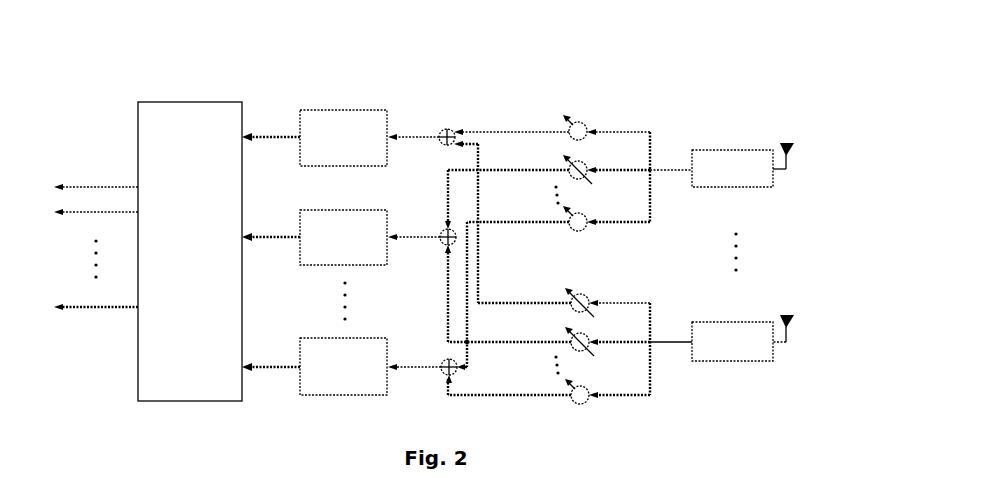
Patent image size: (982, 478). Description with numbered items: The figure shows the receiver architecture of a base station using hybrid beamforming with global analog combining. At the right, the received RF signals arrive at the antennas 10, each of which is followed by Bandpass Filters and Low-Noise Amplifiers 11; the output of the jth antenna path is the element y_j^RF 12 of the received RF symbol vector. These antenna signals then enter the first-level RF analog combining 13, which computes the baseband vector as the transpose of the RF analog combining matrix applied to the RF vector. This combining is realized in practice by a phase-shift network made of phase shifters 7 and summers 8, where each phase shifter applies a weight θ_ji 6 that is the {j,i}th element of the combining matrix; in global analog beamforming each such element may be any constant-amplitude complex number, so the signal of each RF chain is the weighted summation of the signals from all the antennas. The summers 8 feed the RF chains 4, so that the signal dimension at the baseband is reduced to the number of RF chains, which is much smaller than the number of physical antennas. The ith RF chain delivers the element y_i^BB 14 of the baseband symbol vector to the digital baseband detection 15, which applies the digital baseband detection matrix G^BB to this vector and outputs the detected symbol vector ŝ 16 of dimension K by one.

The RF chains 4 is at (338, 104).
The θ_ji 6 is at (626, 93).
The phase shifters 7 is at (556, 120).
The summers 8 is at (439, 127).
The antennas 10 is at (785, 131).
The Bandpass Filters and Low-Noise Amplifiers 11 is at (722, 146).
The y_j^RF 12 is at (670, 130).
The RF analog combining 13 is at (563, 75).
The y_i^BB 14 is at (275, 98).
The digital baseband detection 15 is at (185, 99).
The ŝ 16 is at (66, 261).